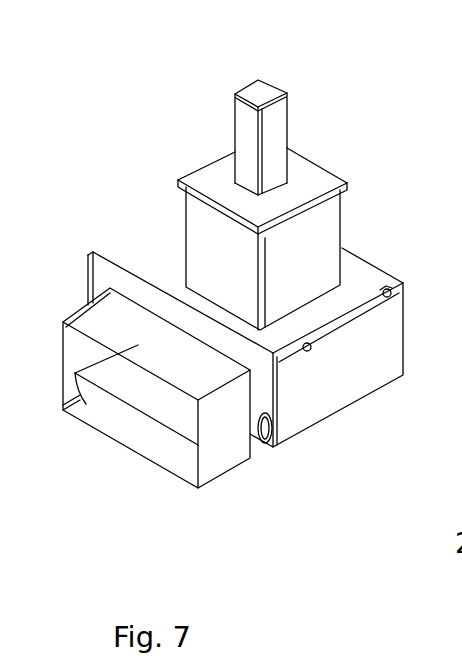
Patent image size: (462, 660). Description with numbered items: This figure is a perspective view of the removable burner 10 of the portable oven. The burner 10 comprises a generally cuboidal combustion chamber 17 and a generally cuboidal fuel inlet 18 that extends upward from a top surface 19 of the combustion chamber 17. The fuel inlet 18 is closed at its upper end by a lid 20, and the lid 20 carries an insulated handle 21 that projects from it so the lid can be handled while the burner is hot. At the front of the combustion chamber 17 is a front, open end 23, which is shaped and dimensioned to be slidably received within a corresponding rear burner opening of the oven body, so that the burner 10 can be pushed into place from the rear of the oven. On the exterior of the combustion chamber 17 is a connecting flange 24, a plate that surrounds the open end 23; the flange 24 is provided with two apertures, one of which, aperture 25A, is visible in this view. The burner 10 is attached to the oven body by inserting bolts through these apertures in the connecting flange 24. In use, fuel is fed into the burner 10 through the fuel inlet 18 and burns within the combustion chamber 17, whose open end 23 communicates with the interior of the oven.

The removable burner 10 is at (170, 124).
The combustion chamber 17 is at (352, 378).
The fuel inlet 18 is at (342, 220).
The top surface 19 is at (353, 277).
The lid 20 is at (315, 165).
The insulated handle 21 is at (281, 88).
The front open end 23 is at (103, 468).
The connecting flange 24 is at (113, 263).
The aperture 25A is at (272, 442).